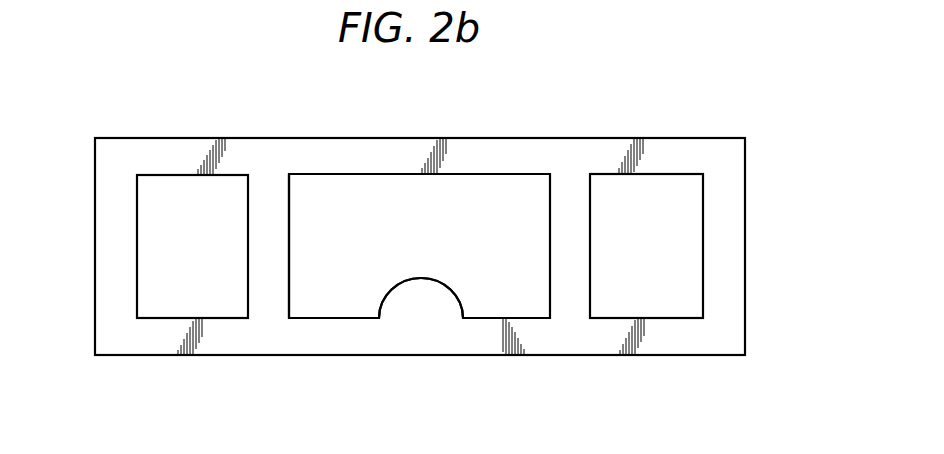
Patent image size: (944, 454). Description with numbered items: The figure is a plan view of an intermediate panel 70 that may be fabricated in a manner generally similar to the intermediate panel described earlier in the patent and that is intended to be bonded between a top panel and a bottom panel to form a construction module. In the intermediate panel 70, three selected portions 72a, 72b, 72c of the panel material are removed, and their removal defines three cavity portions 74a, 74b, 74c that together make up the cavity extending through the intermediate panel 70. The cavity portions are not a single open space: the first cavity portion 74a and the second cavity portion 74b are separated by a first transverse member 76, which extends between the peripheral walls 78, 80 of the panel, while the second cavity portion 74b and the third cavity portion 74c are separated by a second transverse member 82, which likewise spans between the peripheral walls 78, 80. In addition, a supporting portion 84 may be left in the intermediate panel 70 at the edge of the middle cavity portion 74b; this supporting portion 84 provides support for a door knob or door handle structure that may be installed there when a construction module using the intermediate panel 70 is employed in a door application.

The intermediate panel 70 is at (746, 232).
The first selected portion 72a is at (643, 183).
The second selected portion 72b is at (507, 192).
The third selected portion 72c is at (166, 190).
The first cavity portion 74a is at (170, 280).
The second cavity portion 74b is at (358, 268).
The third cavity portion 74c is at (672, 218).
The first transverse member 76 is at (281, 230).
The peripheral wall 78 is at (220, 342).
The peripheral wall 80 is at (390, 148).
The second transverse member 82 is at (574, 294).
The supporting portion 84 is at (422, 303).